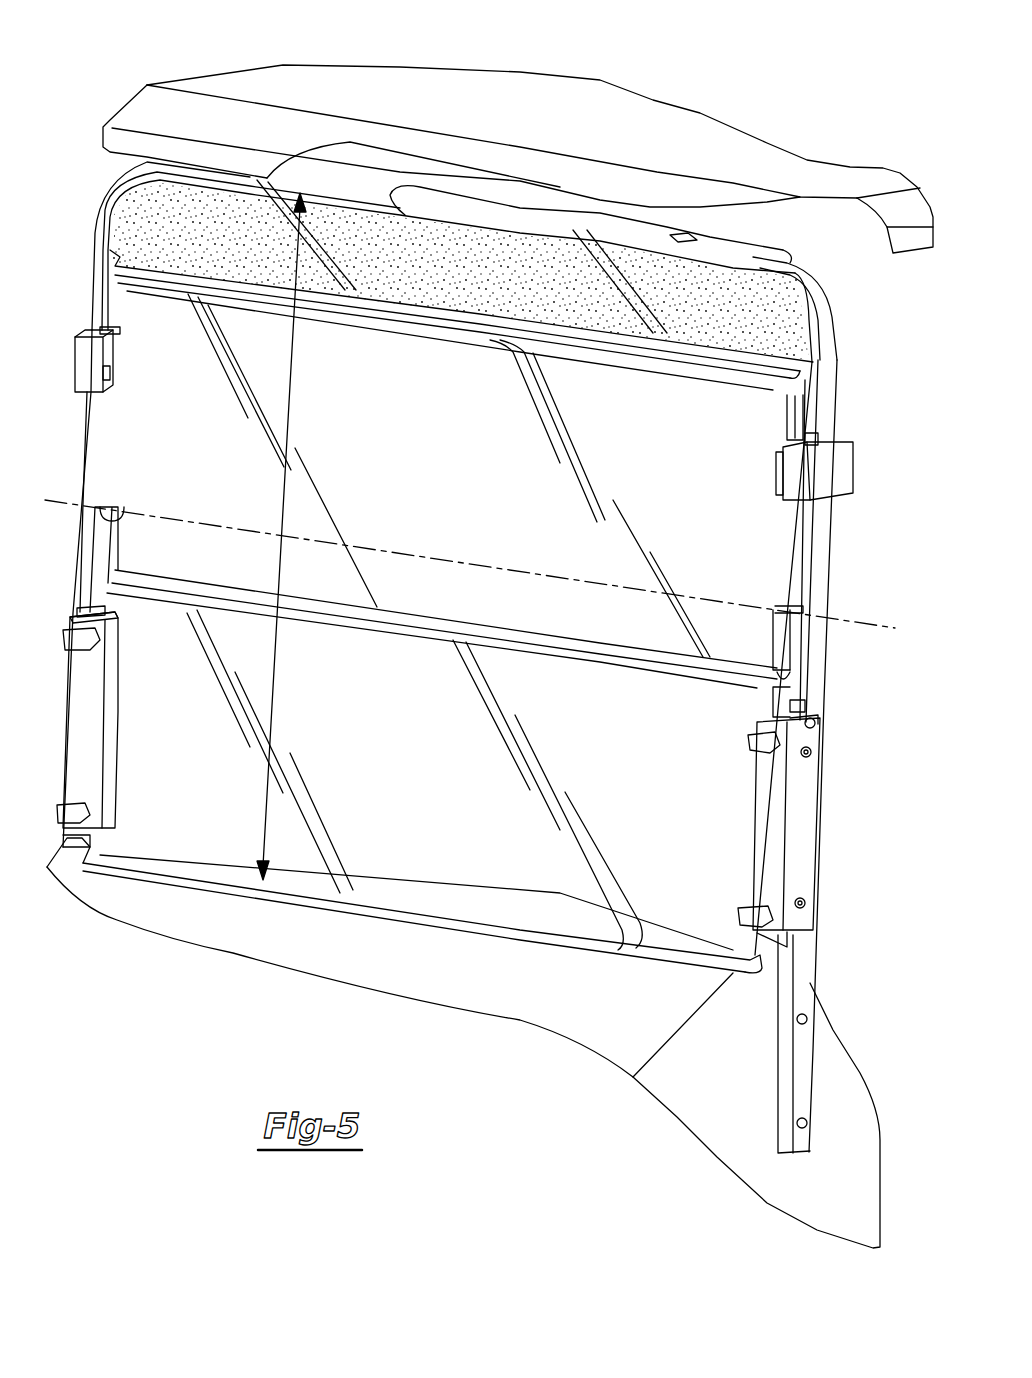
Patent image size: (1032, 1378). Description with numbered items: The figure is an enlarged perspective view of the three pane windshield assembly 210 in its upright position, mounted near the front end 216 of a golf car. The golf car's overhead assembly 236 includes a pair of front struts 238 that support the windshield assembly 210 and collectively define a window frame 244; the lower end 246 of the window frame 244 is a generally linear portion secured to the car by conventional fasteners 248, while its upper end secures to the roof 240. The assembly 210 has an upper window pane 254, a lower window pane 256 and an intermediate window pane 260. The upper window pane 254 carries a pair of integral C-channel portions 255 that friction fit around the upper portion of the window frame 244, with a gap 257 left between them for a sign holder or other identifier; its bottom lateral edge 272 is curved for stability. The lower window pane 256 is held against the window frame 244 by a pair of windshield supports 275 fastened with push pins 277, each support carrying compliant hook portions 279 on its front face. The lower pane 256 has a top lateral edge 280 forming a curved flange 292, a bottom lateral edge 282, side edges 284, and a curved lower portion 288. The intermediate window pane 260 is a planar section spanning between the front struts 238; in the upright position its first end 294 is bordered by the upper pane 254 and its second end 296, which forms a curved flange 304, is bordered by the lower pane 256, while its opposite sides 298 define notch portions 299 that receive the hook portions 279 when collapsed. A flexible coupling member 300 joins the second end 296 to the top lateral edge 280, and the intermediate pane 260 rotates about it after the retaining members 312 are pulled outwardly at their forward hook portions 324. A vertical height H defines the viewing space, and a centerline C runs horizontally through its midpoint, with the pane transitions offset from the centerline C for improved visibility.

The three pane windshield assembly 210 is at (65, 170).
The front end 216 is at (552, 1000).
The overhead assembly 236 is at (92, 80).
The front struts 238 is at (83, 550).
The roof 240 is at (250, 78).
The window frame 244 is at (832, 292).
The lower end 246 is at (803, 1140).
The fasteners 248 is at (807, 1022).
The upper window pane 254 is at (478, 272).
The C-channel portions 255 is at (353, 183).
The lower window pane 256 is at (439, 744).
The gap 257 is at (471, 184).
The intermediate window pane 260 is at (452, 474).
The bottom lateral edge 272 is at (430, 305).
The windshield supports 275 is at (85, 702).
The push pins 277 is at (808, 760).
The hook portions 279 is at (97, 650).
The top lateral edge 280 is at (812, 717).
The bottom lateral edge 282 is at (567, 930).
The side edges 284 is at (100, 606).
The lower portion 288 is at (457, 897).
The curved flange 292 is at (806, 710).
The first end 294 is at (815, 377).
The second end 296 is at (795, 673).
The opposite sides 298 is at (83, 427).
The notch portions 299 is at (112, 332).
The flexible coupling member 300 is at (445, 628).
The curved flange 304 is at (775, 662).
The retaining members 312 is at (75, 337).
The forward hook portions 324 is at (106, 374).
The centerline C is at (448, 558).
The vertical height H is at (279, 564).